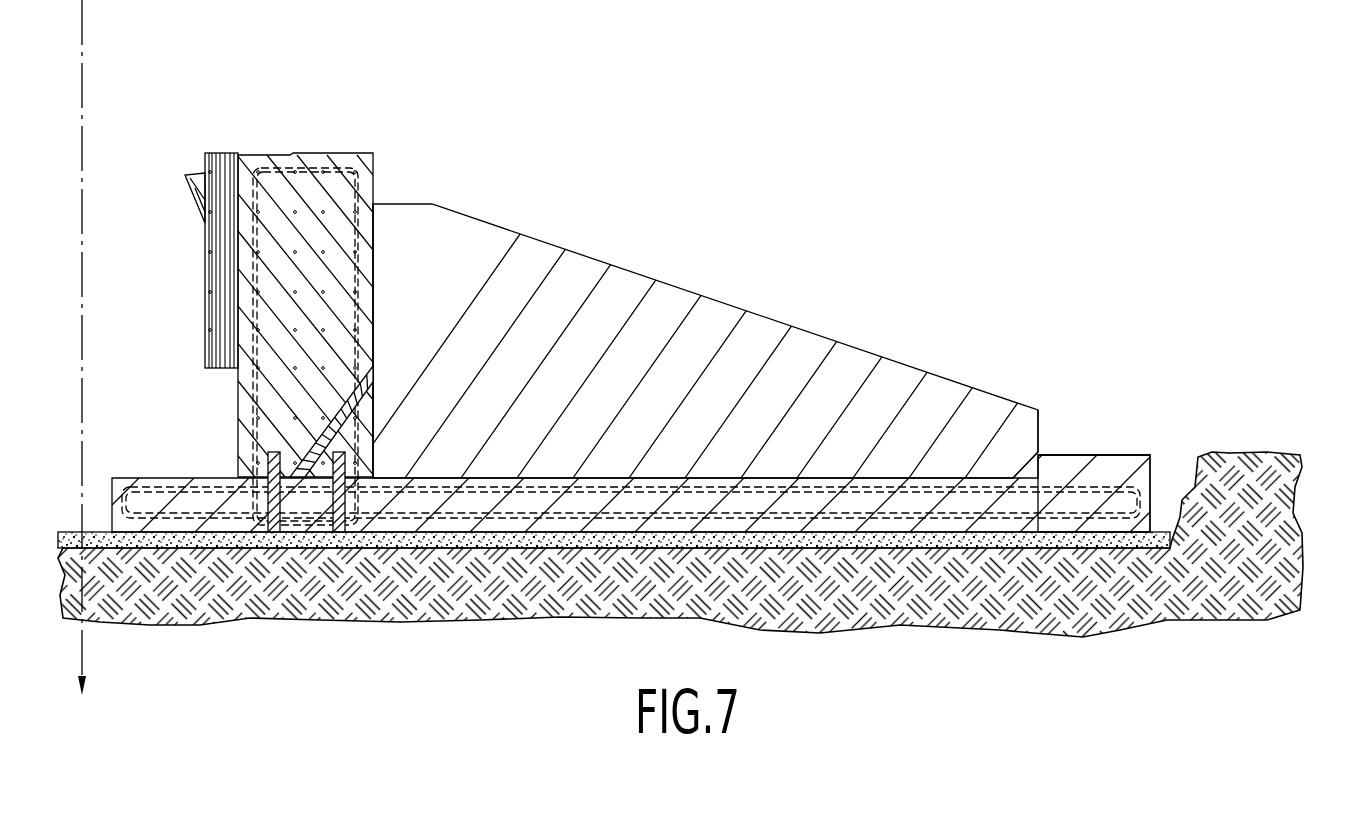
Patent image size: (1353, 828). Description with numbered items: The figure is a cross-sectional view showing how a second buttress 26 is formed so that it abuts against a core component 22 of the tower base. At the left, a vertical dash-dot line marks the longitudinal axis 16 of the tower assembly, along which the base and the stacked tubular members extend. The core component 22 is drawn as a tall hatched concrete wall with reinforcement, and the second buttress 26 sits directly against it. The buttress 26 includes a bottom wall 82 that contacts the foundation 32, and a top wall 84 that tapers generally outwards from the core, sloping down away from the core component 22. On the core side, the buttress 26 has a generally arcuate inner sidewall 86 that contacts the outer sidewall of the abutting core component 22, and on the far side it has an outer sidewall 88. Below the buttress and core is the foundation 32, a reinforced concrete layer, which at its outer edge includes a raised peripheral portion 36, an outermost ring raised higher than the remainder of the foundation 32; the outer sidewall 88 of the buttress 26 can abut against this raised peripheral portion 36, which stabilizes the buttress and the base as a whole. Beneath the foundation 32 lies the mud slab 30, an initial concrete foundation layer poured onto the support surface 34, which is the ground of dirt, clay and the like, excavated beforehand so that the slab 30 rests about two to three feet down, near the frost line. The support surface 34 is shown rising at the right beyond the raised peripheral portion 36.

The longitudinal axis 16 is at (82, 68).
The core component 22 is at (389, 150).
The second buttress 26 is at (668, 414).
The mud slab 30 is at (1160, 523).
The foundation 32 is at (1100, 480).
The raised peripheral portion 36 is at (1078, 463).
The bottom wall 82 is at (553, 480).
The top wall 84 is at (663, 281).
The inner sidewall 86 is at (373, 273).
The outer sidewall 88 is at (1040, 418).
The support surface 34 is at (1284, 449).